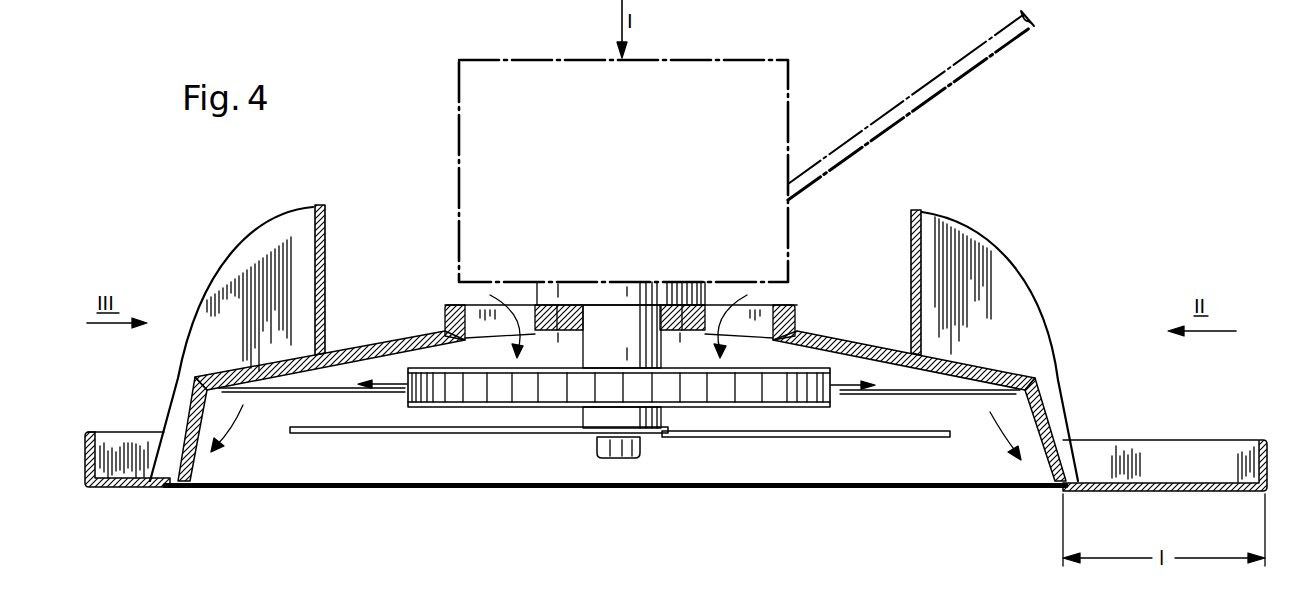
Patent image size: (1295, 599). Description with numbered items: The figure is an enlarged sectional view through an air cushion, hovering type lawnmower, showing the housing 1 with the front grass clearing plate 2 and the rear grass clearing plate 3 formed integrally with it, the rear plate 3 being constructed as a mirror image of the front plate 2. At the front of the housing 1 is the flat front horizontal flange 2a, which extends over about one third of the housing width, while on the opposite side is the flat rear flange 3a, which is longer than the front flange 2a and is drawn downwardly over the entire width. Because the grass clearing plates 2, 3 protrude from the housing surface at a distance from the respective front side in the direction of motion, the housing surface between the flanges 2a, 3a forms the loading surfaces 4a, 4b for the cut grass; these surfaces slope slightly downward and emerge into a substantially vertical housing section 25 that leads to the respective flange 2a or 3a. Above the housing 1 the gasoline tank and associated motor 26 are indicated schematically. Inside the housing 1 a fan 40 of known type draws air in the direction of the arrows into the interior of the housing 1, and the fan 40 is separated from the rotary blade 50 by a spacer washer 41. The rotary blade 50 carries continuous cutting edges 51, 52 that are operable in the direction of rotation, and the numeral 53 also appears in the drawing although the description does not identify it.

The housing 1 is at (297, 495).
The front grass clearing plate 2 is at (327, 266).
The front horizontal flange 2a is at (125, 489).
The rear grass clearing plate 3 is at (910, 278).
The rear flange 3a is at (1206, 480).
The loading surface 4a is at (233, 375).
The loading surface 4b is at (1001, 373).
The vertical housing section 25 is at (178, 422).
The gasoline tank and associated motor 26 is at (446, 187).
The fan 40 is at (409, 402).
The spacer washer 41 is at (653, 440).
The rotary blade 50 is at (386, 448).
The cutting edge 51 is at (818, 438).
The cutting edge 52 is at (406, 595).
The plate 53 is at (725, 595).